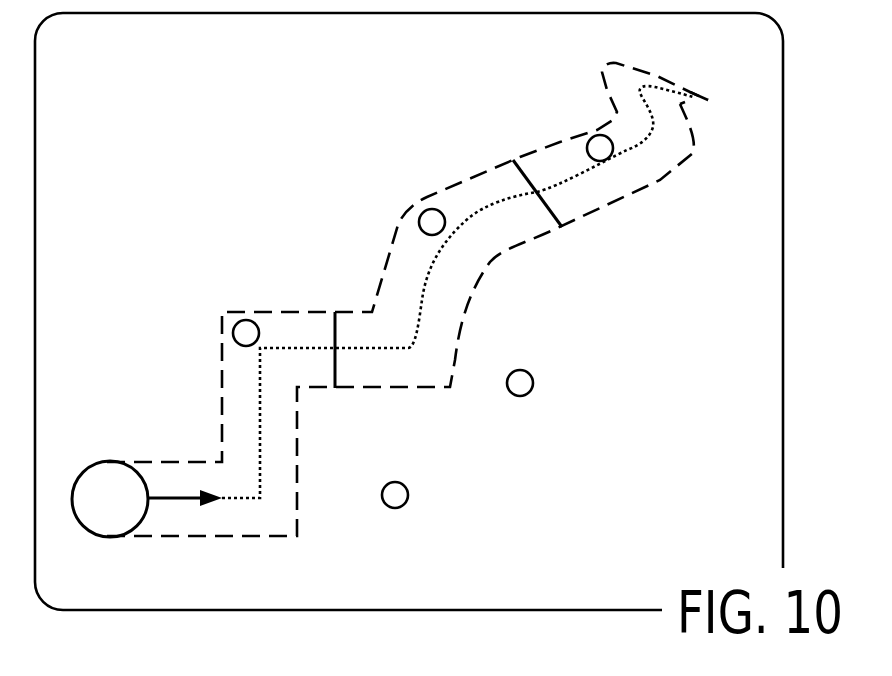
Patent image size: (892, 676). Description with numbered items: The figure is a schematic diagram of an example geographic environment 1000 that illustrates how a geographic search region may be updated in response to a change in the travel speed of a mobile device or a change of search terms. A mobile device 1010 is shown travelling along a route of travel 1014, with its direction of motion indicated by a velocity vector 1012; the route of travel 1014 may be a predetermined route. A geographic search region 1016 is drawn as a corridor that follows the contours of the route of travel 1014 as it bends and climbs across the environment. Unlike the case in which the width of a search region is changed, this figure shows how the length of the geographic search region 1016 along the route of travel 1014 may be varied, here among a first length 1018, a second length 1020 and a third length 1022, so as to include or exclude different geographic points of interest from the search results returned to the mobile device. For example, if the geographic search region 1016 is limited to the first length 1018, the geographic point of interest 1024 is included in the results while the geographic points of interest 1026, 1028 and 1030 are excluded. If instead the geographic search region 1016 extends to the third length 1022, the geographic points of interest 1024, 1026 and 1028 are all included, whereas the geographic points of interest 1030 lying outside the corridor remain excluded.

The geographic environment 1000 is at (693, 427).
The mobile device 1010 is at (132, 511).
The velocity vector 1012 is at (190, 493).
The route of travel 1014 is at (238, 502).
The geographic search region 1016 is at (273, 310).
The length 1018 is at (335, 388).
The length 1020 is at (562, 227).
The length 1022 is at (712, 102).
The geographic point of interest 1024 is at (232, 332).
The geographic point of interest 1026 is at (418, 213).
The geographic point of interest 1028 is at (590, 135).
The geographic points of interest 1030 is at (517, 385).